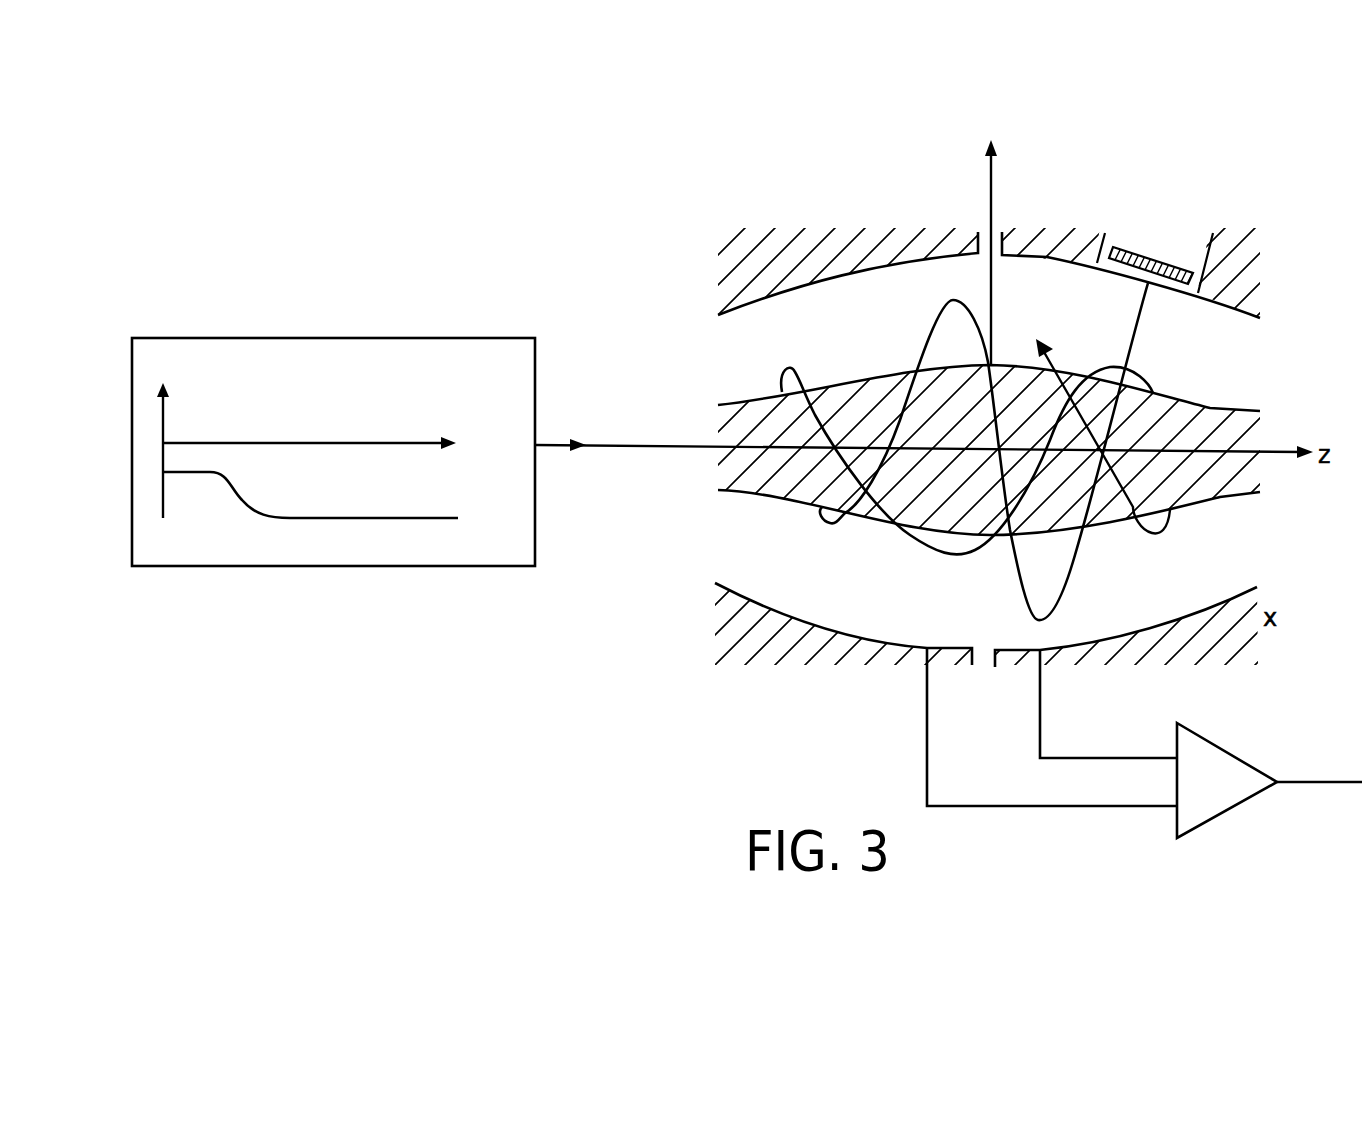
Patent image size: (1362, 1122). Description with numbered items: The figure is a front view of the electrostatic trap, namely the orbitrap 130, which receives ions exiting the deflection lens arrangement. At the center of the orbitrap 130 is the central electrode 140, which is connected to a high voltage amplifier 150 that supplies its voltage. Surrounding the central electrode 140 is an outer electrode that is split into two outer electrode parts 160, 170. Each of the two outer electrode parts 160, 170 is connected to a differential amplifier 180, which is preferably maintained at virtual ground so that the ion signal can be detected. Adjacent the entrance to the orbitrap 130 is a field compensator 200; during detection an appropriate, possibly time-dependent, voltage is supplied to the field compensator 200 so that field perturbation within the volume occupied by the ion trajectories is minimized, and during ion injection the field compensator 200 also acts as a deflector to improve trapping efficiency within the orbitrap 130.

The orbitrap 130 is at (853, 202).
The central electrode 140 is at (1245, 412).
The high voltage amplifier 150 is at (458, 338).
The outer electrode part 160 is at (862, 640).
The outer electrode part 170 is at (1105, 640).
The differential amplifier 180 is at (1215, 802).
The field compensator 200 is at (1175, 287).